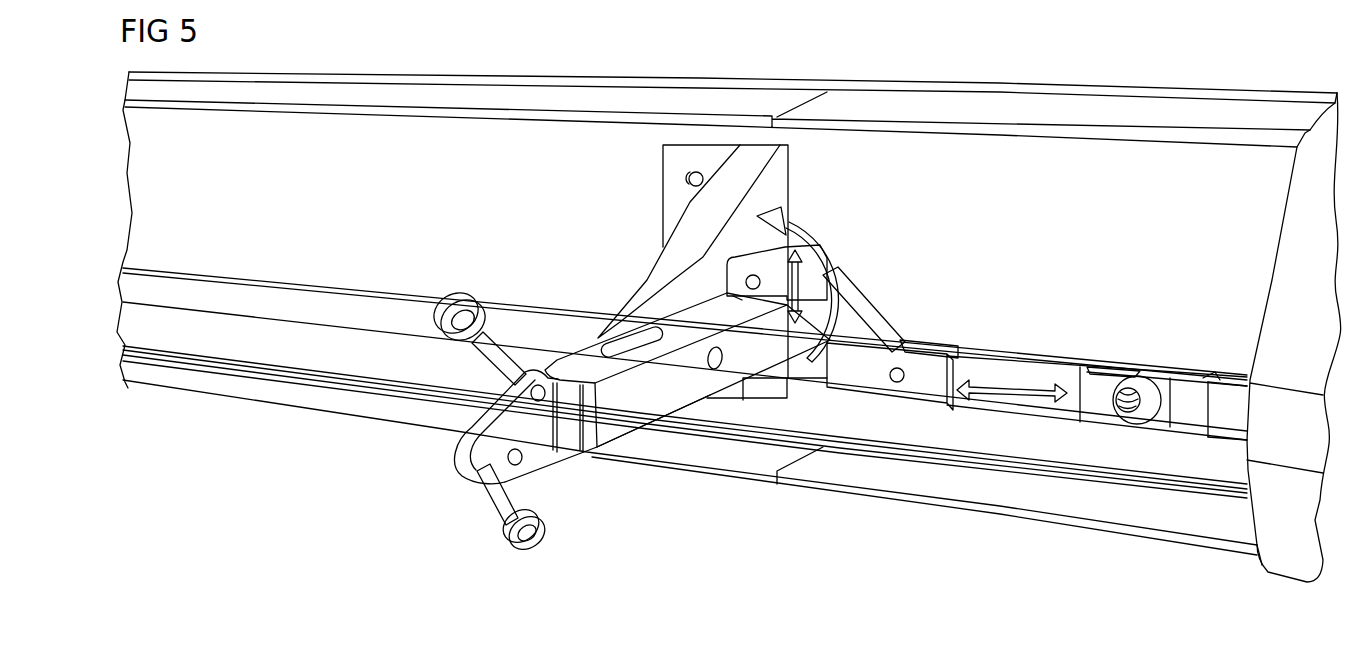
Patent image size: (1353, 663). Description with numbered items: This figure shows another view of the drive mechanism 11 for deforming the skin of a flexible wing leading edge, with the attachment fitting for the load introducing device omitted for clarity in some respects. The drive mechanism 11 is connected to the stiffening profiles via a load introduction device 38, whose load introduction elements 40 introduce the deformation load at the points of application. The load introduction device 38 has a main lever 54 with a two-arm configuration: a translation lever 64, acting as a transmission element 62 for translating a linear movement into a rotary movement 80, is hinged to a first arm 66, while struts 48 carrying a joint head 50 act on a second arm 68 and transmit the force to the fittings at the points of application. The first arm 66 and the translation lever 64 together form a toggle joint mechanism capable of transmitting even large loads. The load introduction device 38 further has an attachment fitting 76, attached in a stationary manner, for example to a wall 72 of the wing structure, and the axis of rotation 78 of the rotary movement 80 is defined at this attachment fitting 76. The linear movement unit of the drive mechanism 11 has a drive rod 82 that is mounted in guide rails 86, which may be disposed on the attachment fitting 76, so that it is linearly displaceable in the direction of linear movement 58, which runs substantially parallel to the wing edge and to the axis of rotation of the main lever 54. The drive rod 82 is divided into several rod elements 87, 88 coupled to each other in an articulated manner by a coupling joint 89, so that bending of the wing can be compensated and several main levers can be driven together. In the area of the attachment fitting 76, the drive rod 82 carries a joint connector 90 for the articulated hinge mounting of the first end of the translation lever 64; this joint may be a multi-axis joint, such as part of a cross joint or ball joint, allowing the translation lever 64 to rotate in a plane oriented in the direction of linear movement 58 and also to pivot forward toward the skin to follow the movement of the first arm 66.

The drive mechanism 11 is at (729, 329).
The load introduction device 38 is at (595, 484).
The load introduction elements 40 is at (466, 431).
The struts 48 is at (495, 364).
The joint head 50 is at (440, 318).
The main lever 54 is at (622, 445).
The direction of linear movement 58 is at (1037, 394).
The transmission element 62 is at (853, 300).
The translation lever 64 is at (885, 308).
The first arm 66 is at (818, 273).
The second arm 68 is at (667, 404).
The wall 72 is at (517, 117).
The attachment fitting 76 is at (665, 175).
The axis of rotation 78 is at (728, 352).
The rotary movement 80 is at (820, 240).
The drive rod 82 is at (243, 297).
The guide rails 86 is at (746, 401).
The rod element 87 is at (523, 310).
The rod element 88 is at (1203, 377).
The coupling joint 89 is at (1131, 424).
The joint connector 90 is at (913, 395).